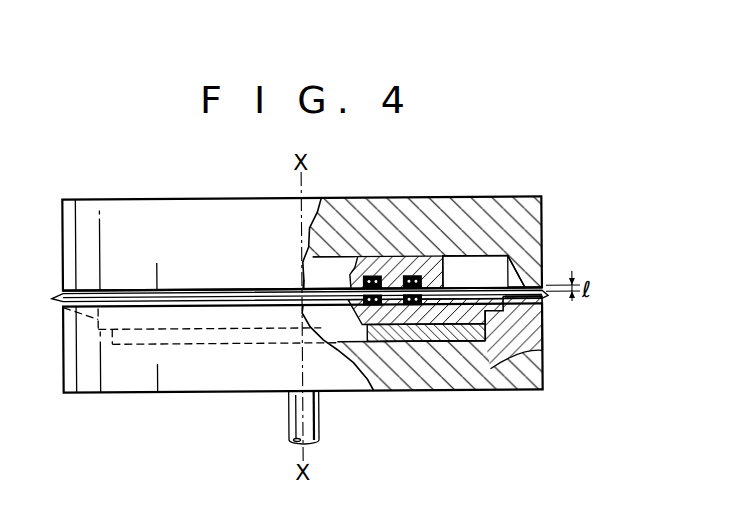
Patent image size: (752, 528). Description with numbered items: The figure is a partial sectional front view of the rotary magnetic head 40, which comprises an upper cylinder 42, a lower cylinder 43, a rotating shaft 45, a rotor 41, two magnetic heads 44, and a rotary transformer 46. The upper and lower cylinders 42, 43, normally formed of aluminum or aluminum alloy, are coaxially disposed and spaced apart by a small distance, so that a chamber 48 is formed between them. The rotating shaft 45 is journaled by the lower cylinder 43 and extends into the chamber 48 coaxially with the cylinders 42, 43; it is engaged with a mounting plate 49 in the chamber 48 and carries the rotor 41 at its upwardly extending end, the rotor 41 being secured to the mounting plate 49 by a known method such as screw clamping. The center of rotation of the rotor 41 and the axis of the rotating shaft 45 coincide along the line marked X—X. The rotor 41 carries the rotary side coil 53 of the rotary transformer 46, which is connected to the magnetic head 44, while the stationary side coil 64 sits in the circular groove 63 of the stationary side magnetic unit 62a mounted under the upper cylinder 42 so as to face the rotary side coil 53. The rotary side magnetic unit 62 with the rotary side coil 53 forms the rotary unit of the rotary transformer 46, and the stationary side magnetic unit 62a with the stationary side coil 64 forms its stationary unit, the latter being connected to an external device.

The rotary magnetic head 40 is at (485, 180).
The rotor 41 is at (494, 335).
The upper cylinder 42 is at (110, 204).
The lower cylinder 43 is at (118, 387).
The magnetic head 44 is at (522, 304).
The rotating shaft 45 is at (318, 420).
The rotary transformer 46 is at (327, 281).
The chamber 48 is at (512, 386).
The mounting plate 49 is at (472, 344).
The rotary side coil 53 is at (434, 327).
The rotary side magnetic unit 62 is at (390, 306).
The stationary side magnetic unit 62a is at (484, 271).
The circular groove 63 is at (372, 275).
The stationary side coil 64 is at (412, 275).